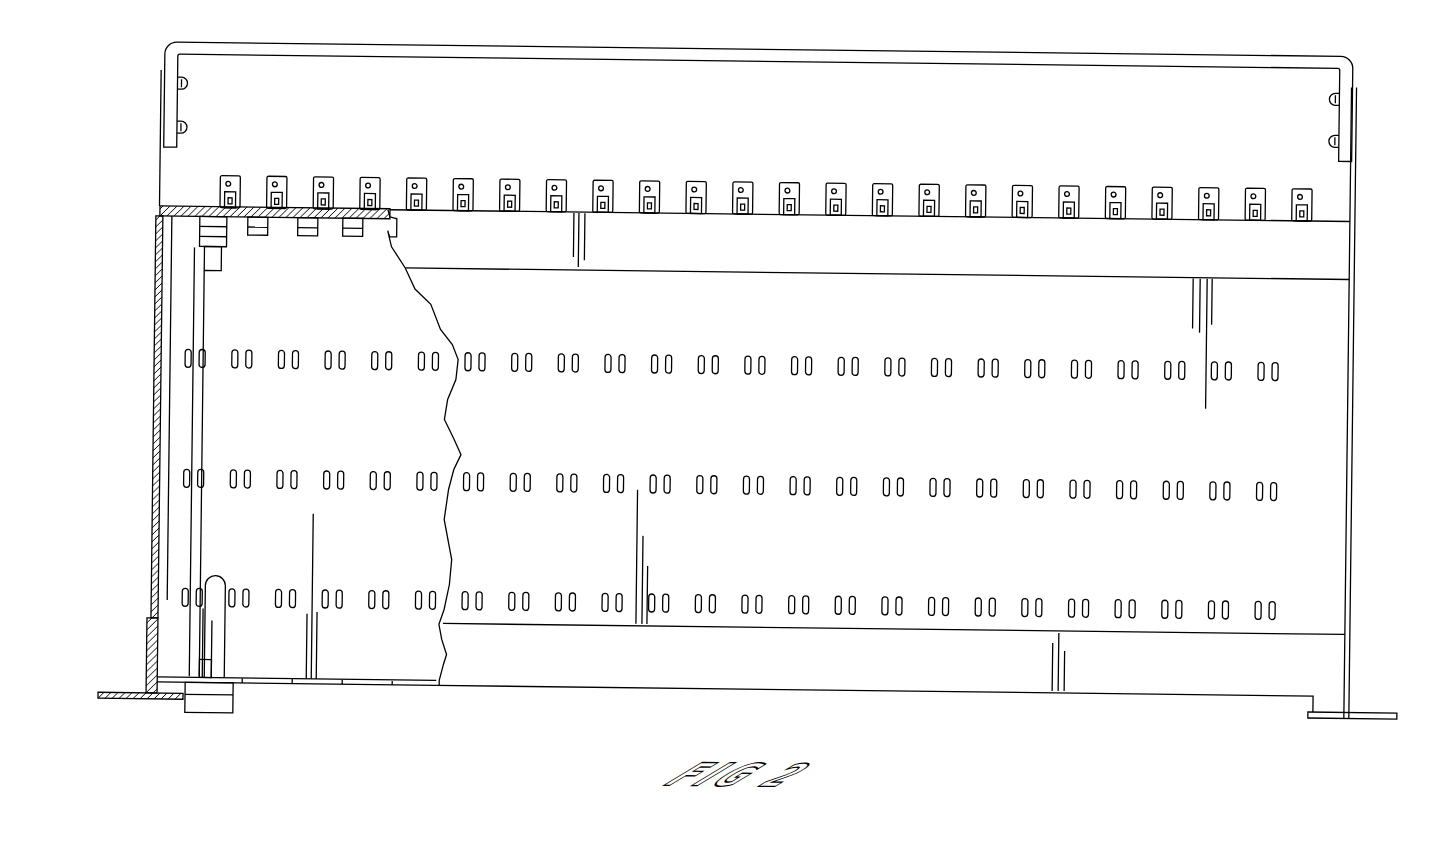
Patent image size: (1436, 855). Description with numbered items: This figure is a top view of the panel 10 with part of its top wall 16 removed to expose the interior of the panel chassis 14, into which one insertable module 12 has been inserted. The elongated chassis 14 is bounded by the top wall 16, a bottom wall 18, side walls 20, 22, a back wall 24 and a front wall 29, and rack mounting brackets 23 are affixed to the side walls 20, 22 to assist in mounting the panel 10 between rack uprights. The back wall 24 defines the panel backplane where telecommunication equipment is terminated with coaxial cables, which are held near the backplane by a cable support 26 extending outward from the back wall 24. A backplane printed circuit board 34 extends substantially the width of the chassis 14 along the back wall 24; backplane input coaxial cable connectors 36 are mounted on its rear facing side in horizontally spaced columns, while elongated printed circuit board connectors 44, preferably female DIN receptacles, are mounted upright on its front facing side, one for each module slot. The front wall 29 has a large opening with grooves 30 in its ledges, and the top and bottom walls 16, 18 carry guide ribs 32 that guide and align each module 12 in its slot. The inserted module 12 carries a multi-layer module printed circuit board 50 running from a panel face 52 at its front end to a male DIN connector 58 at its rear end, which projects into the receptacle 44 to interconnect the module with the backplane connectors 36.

The panel 10 is at (1378, 166).
The insertable module 12 is at (216, 730).
The panel chassis 14 is at (1100, 694).
The top wall 16 is at (893, 421).
The bottom wall 18 is at (401, 547).
The side wall 20 is at (157, 390).
The side wall 22 is at (1357, 418).
The rack mounting bracket 23 is at (126, 692).
The back wall 24 is at (196, 205).
The cable support 26 is at (944, 56).
The front wall 29 is at (418, 685).
The groove 30 is at (343, 684).
The guide rib 32 is at (349, 466).
The backplane printed circuit board 34 is at (289, 219).
The backplane input coaxial cable connector 36 is at (325, 174).
The printed circuit board connector 44 is at (348, 236).
The module printed circuit board 50 is at (204, 413).
The panel face 52 is at (233, 691).
The printed circuit board connector 58 is at (228, 244).